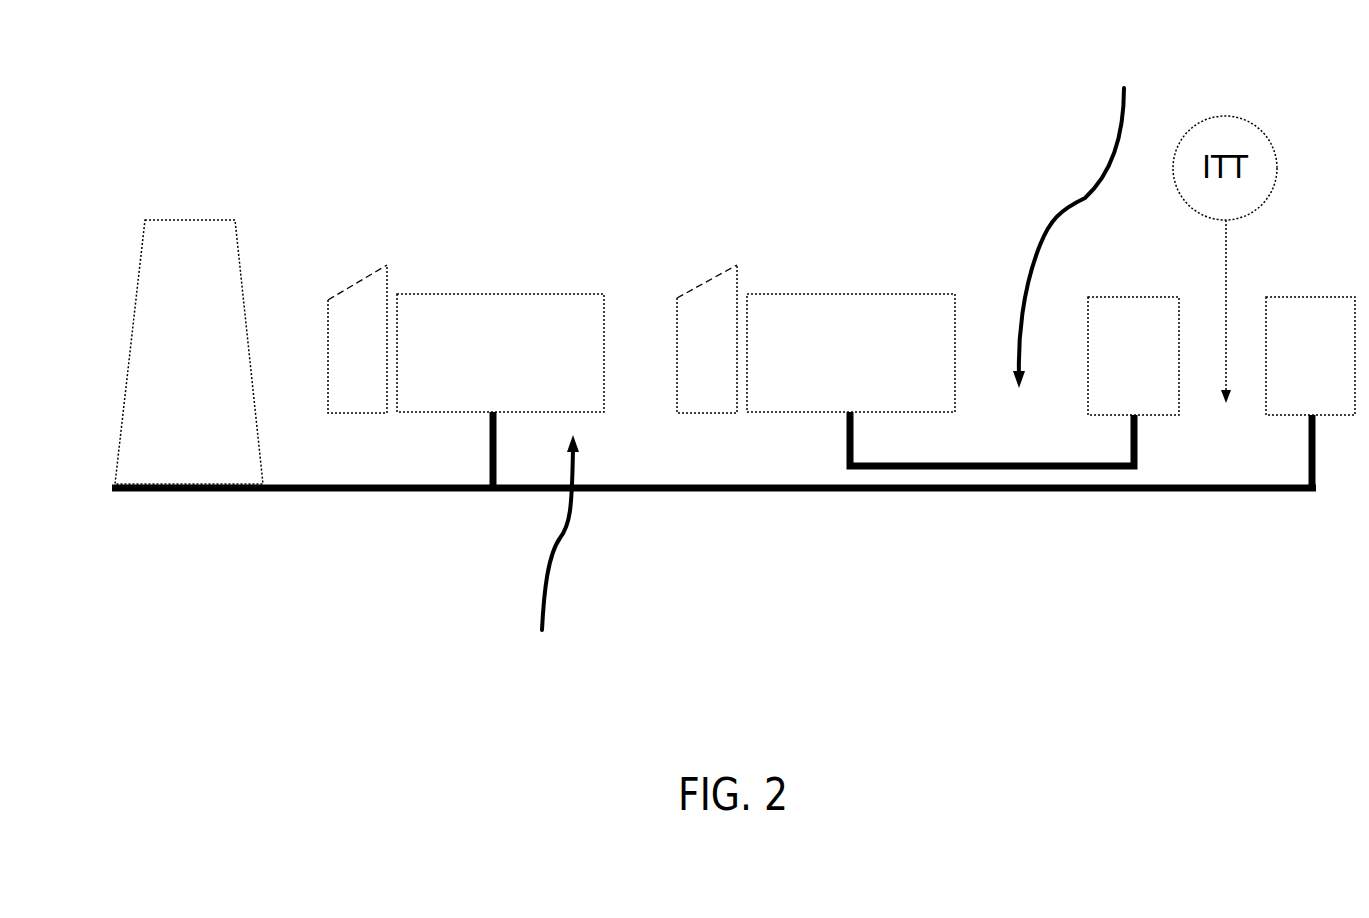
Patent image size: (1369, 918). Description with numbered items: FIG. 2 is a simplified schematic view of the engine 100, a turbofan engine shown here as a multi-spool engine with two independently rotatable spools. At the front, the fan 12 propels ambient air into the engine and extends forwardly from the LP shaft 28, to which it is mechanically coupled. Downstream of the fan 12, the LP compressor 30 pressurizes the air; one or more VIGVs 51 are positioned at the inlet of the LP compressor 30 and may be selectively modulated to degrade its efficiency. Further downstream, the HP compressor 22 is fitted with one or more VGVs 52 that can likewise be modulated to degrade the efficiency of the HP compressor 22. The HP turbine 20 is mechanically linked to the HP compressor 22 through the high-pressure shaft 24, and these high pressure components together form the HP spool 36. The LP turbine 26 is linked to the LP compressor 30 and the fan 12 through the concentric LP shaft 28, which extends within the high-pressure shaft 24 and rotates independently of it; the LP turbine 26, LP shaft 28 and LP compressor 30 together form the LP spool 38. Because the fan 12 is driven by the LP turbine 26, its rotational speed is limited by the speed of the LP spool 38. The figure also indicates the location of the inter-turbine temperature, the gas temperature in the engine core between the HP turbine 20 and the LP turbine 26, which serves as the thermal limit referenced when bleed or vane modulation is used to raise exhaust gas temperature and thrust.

The engine 100 is at (694, 82).
The fan 12 is at (209, 368).
The VIGVs 51 is at (368, 270).
The LP compressor 30 is at (481, 368).
The VGVs 52 is at (723, 268).
The HP compressor 22 is at (831, 368).
The HP spool 36 is at (1077, 219).
The HP turbine 20 is at (1116, 372).
The LP turbine 26 is at (1294, 368).
The LP shaft 28 is at (670, 492).
The high-pressure shaft 24 is at (1068, 470).
The LP spool 38 is at (550, 555).